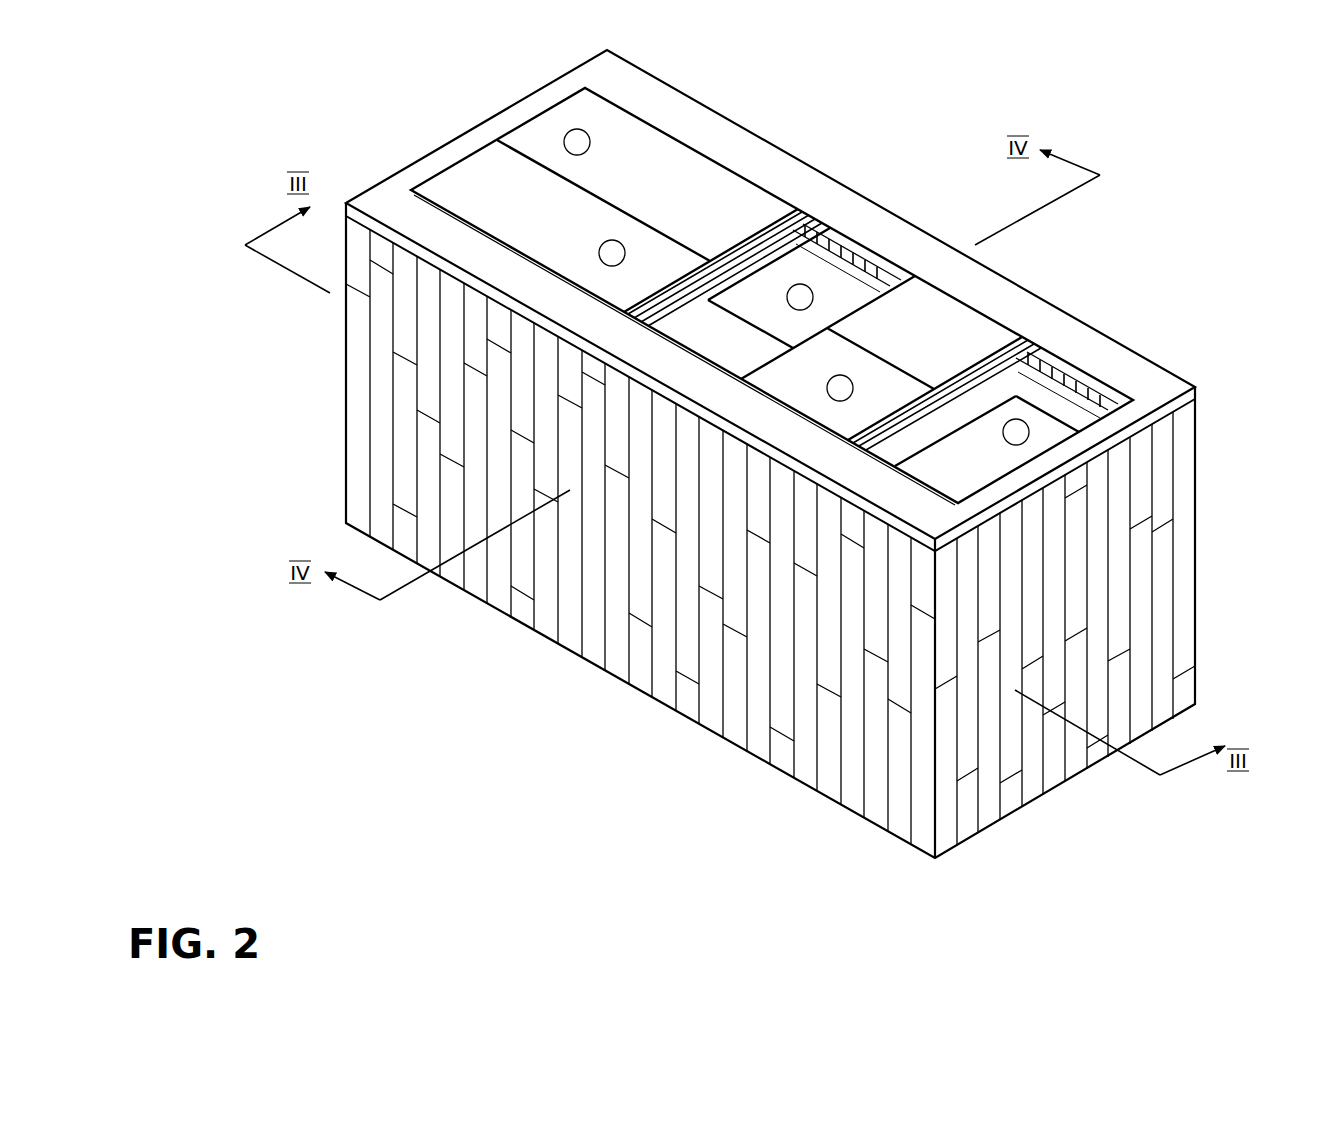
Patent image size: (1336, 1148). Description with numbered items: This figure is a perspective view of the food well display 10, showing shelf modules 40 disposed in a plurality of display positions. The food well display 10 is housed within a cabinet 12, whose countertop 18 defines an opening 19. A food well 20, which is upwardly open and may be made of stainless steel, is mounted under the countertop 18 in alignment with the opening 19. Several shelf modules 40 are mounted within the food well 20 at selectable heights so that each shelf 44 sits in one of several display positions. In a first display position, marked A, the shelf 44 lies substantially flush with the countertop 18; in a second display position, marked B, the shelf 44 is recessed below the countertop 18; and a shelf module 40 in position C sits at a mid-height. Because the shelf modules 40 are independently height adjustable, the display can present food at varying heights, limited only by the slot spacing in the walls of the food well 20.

The food well display 10 is at (894, 65).
The cabinet 12 is at (1202, 556).
The countertop 18 is at (1140, 377).
The opening 19 is at (873, 247).
The food well 20 is at (1098, 362).
The shelf module 40 is at (731, 206).
The shelf 44 is at (478, 172).